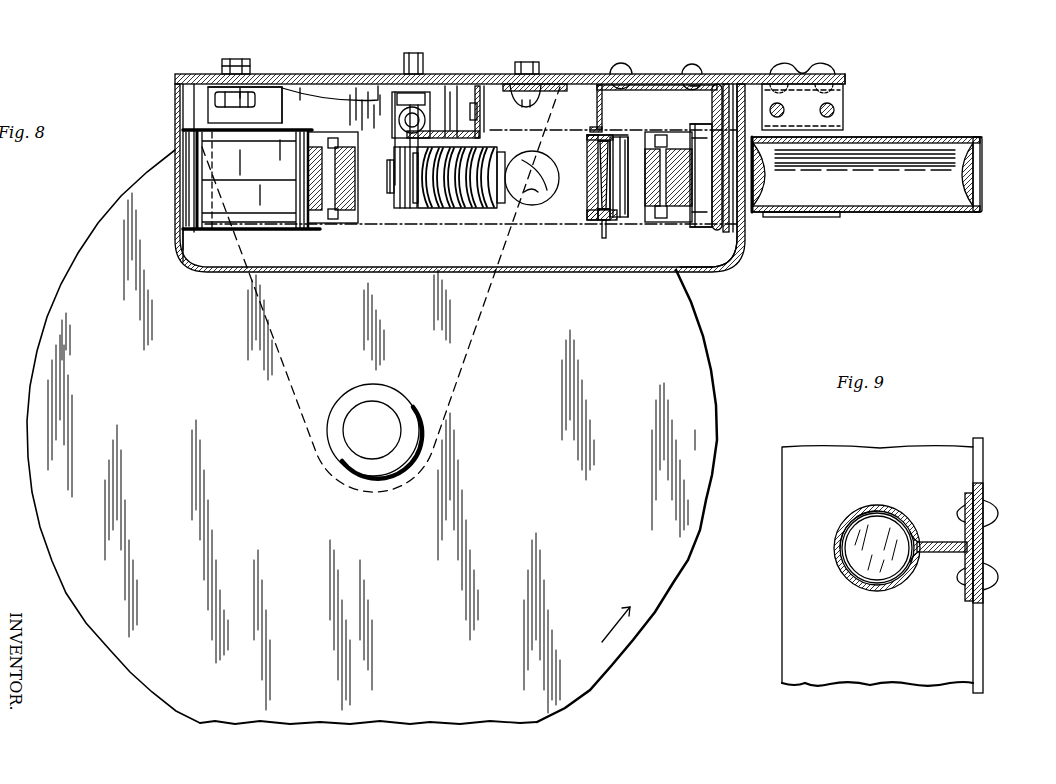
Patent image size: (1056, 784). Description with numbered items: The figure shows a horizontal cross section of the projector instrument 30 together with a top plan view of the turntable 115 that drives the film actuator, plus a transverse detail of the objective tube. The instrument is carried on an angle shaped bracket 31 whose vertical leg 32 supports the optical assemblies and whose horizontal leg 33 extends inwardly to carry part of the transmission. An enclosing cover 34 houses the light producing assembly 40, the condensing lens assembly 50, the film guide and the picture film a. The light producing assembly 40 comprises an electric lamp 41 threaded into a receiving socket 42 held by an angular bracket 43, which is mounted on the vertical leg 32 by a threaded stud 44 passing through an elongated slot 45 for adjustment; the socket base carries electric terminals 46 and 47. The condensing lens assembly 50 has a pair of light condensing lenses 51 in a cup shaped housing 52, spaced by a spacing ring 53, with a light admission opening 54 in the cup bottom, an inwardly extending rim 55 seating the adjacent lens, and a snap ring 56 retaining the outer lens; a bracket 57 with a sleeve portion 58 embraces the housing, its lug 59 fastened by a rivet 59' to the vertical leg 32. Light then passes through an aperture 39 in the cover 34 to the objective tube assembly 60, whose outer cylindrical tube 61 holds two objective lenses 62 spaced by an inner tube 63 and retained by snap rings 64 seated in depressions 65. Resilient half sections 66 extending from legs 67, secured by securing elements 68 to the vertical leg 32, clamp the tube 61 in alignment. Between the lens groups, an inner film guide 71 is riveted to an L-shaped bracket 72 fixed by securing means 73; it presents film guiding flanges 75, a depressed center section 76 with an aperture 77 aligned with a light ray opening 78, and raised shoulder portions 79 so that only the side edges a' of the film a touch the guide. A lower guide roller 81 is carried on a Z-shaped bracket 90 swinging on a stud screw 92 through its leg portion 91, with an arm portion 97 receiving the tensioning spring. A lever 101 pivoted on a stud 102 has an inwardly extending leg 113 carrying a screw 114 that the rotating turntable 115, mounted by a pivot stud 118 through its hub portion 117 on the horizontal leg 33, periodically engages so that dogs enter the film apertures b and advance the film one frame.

In FIG. 8, the projector instrument 30 is at (158, 70).
In FIG. 8, the angle shaped bracket 31 is at (848, 78).
In FIG. 8, the vertical leg 32 is at (322, 74).
In FIG. 9, the vertical leg 32 is at (982, 629).
In FIG. 8, the horizontal leg 33 is at (285, 383).
In FIG. 8, the enclosing cover 34 is at (420, 272).
In FIG. 9, the enclosing cover 34 is at (793, 496).
In FIG. 8, the aperture 39 is at (743, 237).
In FIG. 8, the light producing assembly 40 is at (488, 212).
In FIG. 8, the electric lamp 41 is at (540, 196).
In FIG. 8, the receiving socket 42 is at (457, 205).
In FIG. 8, the angular bracket 43 is at (484, 92).
In FIG. 8, the threaded stud 44 is at (528, 62).
In FIG. 8, the elongated slot 45 is at (548, 84).
In FIG. 8, the electric terminal 46 is at (430, 206).
In FIG. 8, the electric terminal 47 is at (390, 197).
In FIG. 8, the condensing lens assembly 50 is at (602, 248).
In FIG. 8, the light condensing lens 51 is at (603, 184).
In FIG. 8, the cup shaped housing 52 is at (602, 223).
In FIG. 8, the spacing ring 53 is at (606, 221).
In FIG. 8, the light admission opening 54 is at (590, 164).
In FIG. 8, the inwardly extending rim 55 is at (590, 141).
In FIG. 8, the snap ring 56 is at (633, 212).
In FIG. 8, the bracket 57 is at (603, 105).
In FIG. 8, the sleeve portion 58 is at (604, 124).
In FIG. 8, the lug 59 is at (673, 63).
In FIG. 8, the rivet 59' is at (619, 63).
In FIG. 8, the objective tube assembly 60 is at (891, 194).
In FIG. 8, the outer cylindrical tube 61 is at (903, 213).
In FIG. 9, the outer cylindrical tube 61 is at (834, 550).
In FIG. 8, the objective lens 62 is at (767, 184).
In FIG. 9, the objective lens 62 is at (865, 523).
In FIG. 8, the inner tube 63 is at (883, 203).
In FIG. 9, the inner tube 63 is at (847, 577).
In FIG. 8, the snap ring 64 is at (980, 201).
In FIG. 8, the depression 65 is at (973, 143).
In FIG. 8, the half section 66 is at (817, 219).
In FIG. 9, the half section 66 is at (903, 522).
In FIG. 8, the leg 67 is at (838, 101).
In FIG. 9, the leg 67 is at (929, 542).
In FIG. 8, the securing element 68 is at (824, 64).
In FIG. 9, the securing element 68 is at (993, 581).
In FIG. 8, the inner film guide 71 is at (726, 209).
In FIG. 8, the L-shaped bracket 72 is at (734, 123).
In FIG. 8, the securing means 73 is at (692, 68).
In FIG. 8, the film guiding flange 75 is at (732, 120).
In FIG. 8, the depressed center section 76 is at (713, 132).
In FIG. 8, the aperture 77 is at (705, 165).
In FIG. 8, the light ray opening 78 is at (712, 195).
In FIG. 8, the raised shoulder portion 79 is at (700, 273).
In FIG. 8, the lower guide roller 81 is at (214, 235).
In FIG. 8, the Z-shaped bracket 90 is at (218, 113).
In FIG. 8, the leg portion 91 is at (220, 88).
In FIG. 8, the stud screw 92 is at (236, 58).
In FIG. 8, the arm portion 97 is at (263, 99).
In FIG. 8, the lever 101 is at (378, 82).
In FIG. 8, the stud 102 is at (413, 53).
In FIG. 8, the inwardly extending leg 113 is at (462, 95).
In FIG. 8, the screw 114 is at (399, 120).
In FIG. 8, the turntable 115 is at (697, 389).
In FIG. 8, the hub portion 117 is at (410, 413).
In FIG. 8, the pivot stud 118 is at (353, 435).
In FIG. 8, the picture film a is at (235, 177).
In FIG. 8, the side edge a' is at (664, 207).
In FIG. 8, the aperture b is at (334, 219).